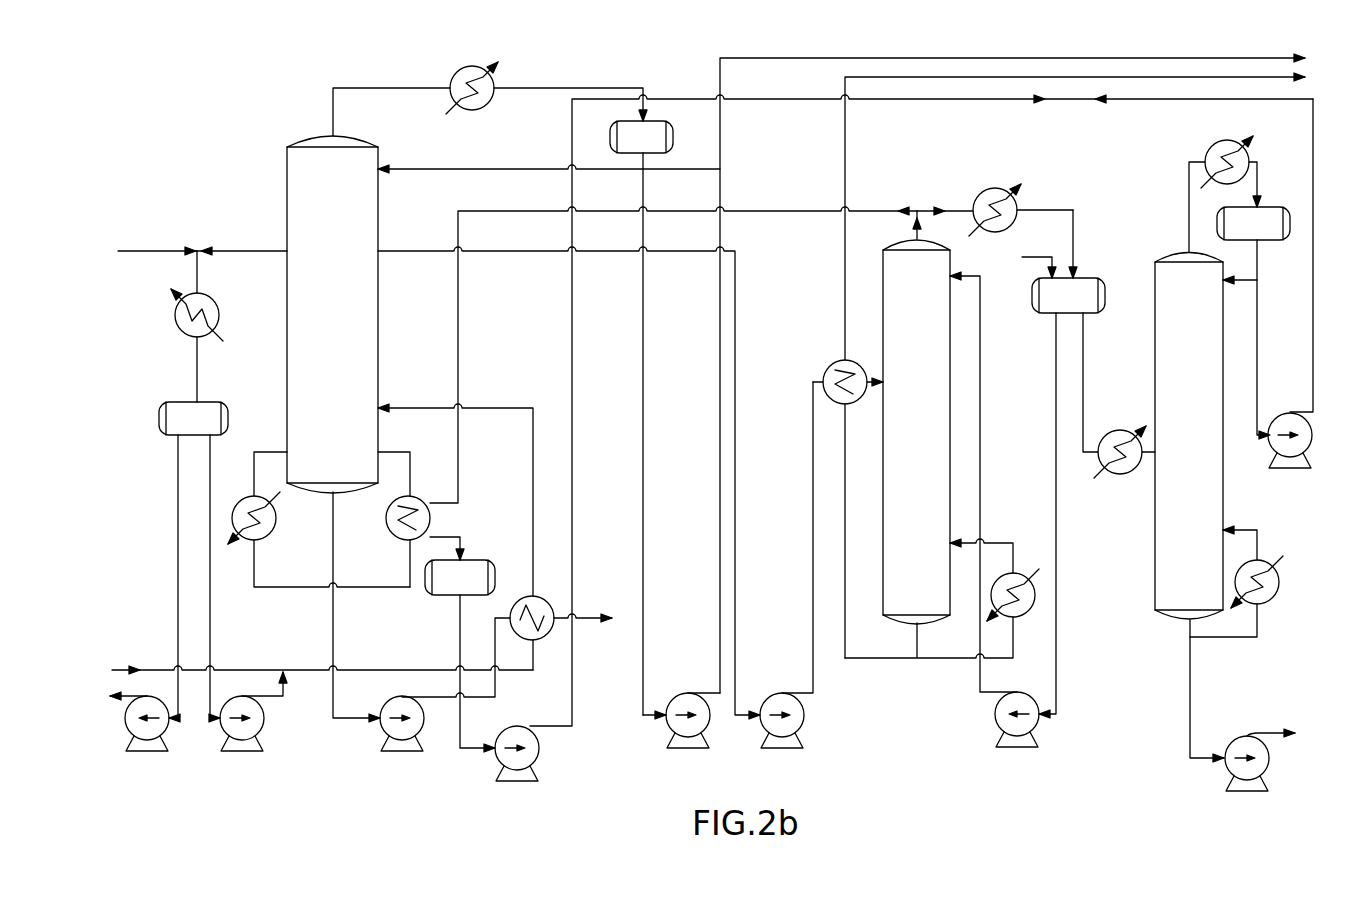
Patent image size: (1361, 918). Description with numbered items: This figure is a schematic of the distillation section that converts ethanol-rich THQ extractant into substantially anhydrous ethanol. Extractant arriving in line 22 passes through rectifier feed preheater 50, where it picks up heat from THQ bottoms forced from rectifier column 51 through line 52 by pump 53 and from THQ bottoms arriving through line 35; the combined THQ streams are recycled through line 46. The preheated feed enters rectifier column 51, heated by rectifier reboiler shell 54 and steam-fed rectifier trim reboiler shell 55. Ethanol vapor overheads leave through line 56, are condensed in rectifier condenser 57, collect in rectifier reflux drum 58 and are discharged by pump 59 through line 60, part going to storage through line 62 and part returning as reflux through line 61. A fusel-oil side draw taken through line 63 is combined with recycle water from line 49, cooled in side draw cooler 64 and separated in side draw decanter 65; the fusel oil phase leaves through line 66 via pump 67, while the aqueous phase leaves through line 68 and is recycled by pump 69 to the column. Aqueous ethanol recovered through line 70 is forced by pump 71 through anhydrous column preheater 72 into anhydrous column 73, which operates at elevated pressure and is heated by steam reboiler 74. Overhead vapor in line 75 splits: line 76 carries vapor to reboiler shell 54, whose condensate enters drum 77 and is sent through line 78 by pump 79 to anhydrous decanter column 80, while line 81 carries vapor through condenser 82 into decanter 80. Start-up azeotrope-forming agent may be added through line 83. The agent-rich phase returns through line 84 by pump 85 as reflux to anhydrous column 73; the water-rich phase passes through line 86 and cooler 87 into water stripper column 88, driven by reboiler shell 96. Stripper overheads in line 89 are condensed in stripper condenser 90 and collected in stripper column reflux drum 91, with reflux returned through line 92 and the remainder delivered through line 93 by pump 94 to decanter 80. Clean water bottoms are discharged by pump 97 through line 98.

The line 22 is at (161, 668).
The line 35 is at (496, 700).
The line 46 is at (600, 620).
The line 49 is at (141, 250).
The rectifier feed preheater 50 is at (540, 597).
The rectifier column 51 is at (346, 329).
The line 52 is at (333, 647).
The pump 53 is at (382, 731).
The rectifier reboiler shell 54 is at (399, 539).
The rectifier trim reboiler shell 55 is at (239, 497).
The line 56 is at (406, 92).
The rectifier condenser 57 is at (488, 111).
The rectifier reflux drum 58 is at (628, 117).
The pump 59 is at (677, 694).
The line 60 is at (720, 381).
The line 61 is at (703, 171).
The line 62 is at (720, 127).
The line 63 is at (237, 250).
The side draw cooler 64 is at (178, 327).
The side draw decanter 65 is at (222, 402).
The line 66 is at (178, 562).
The pump 67 is at (130, 736).
The line 68 is at (210, 630).
The pump 69 is at (264, 737).
The line 70 is at (517, 250).
The pump 71 is at (766, 694).
The anhydrous column preheater 72 is at (830, 367).
The anhydrous column 73 is at (933, 437).
The reboiler 74 is at (1025, 616).
The line 75 is at (915, 232).
The line 76 is at (872, 210).
The drum 77 is at (482, 558).
The line 78 is at (460, 724).
The pump 79 is at (545, 756).
The anhydrous decanter column 80 is at (1087, 278).
The line 81 is at (930, 210).
The condenser 82 is at (985, 188).
The line 83 is at (1043, 260).
The line 84 is at (1055, 412).
The pump 85 is at (995, 714).
The line 86 is at (1085, 364).
The cooler 87 is at (1125, 478).
The water stripper column 88 is at (1200, 432).
The line 89 is at (1187, 190).
The stripper condenser 90 is at (1215, 148).
The stripper column reflux drum 91 is at (1280, 207).
The line 92 is at (1247, 288).
The line 93 is at (1258, 323).
The pump 94 is at (1290, 413).
The reboiler shell 96 is at (1266, 602).
The pump 97 is at (1229, 778).
The line 98 is at (1270, 733).